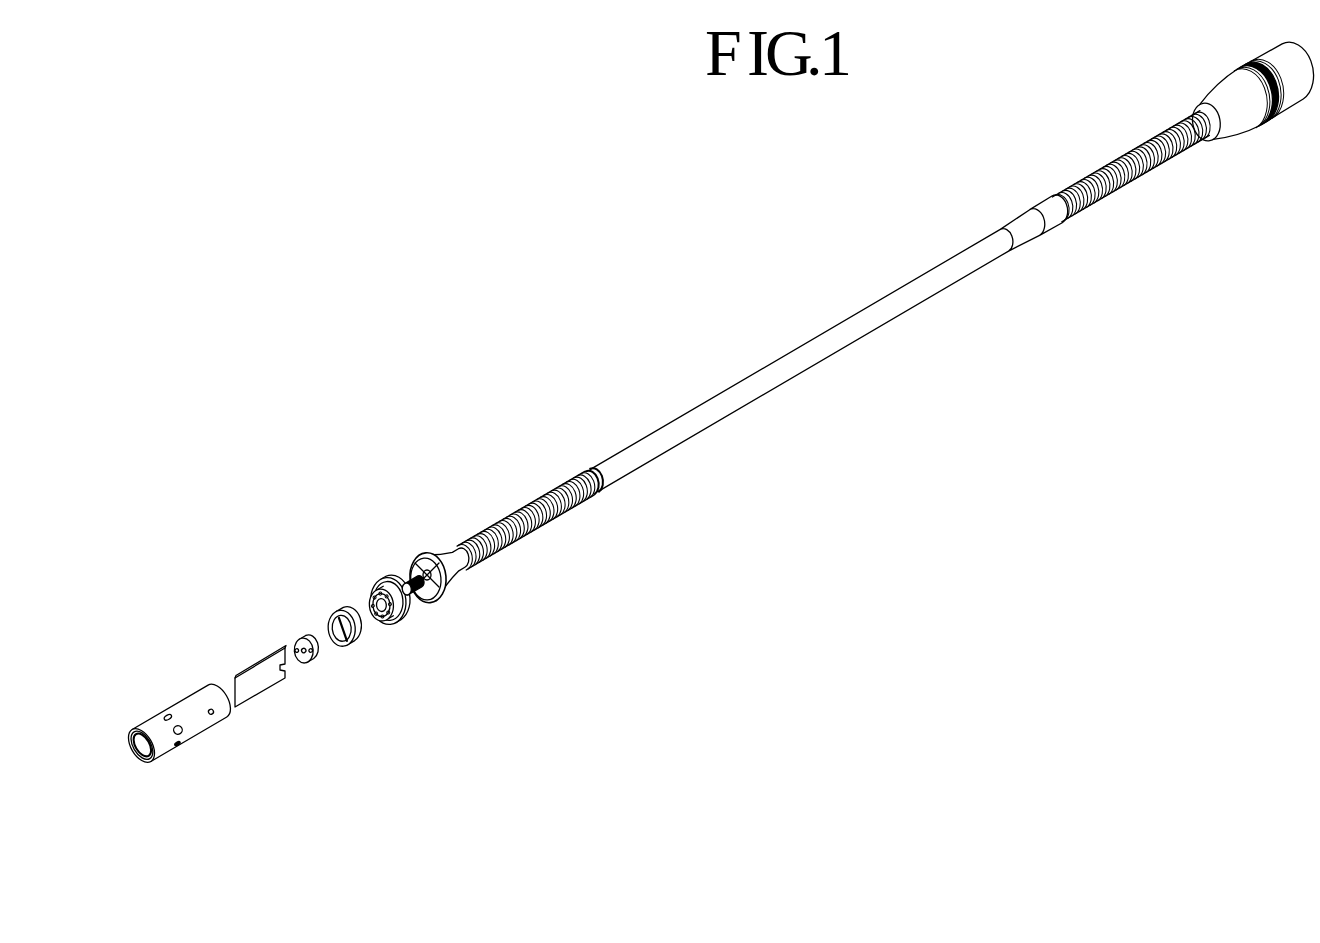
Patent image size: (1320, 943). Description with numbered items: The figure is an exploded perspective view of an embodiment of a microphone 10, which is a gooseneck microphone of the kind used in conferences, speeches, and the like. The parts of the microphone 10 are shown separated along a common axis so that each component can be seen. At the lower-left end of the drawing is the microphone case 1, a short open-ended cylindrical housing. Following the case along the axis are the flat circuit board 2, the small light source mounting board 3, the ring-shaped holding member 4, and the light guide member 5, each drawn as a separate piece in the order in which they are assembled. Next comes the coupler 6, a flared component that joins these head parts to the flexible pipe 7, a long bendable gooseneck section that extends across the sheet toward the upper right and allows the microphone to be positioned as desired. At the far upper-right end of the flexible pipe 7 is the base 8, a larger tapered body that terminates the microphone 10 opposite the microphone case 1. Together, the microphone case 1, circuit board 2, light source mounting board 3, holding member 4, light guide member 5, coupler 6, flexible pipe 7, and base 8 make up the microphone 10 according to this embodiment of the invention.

The microphone case 1 is at (182, 710).
The circuit board 2 is at (258, 672).
The light source mounting board 3 is at (307, 638).
The holding member 4 is at (338, 617).
The light guide member 5 is at (391, 580).
The coupler 6 is at (443, 554).
The flexible pipe 7 is at (535, 506).
The base 8 is at (1220, 84).
The microphone 10 is at (620, 184).